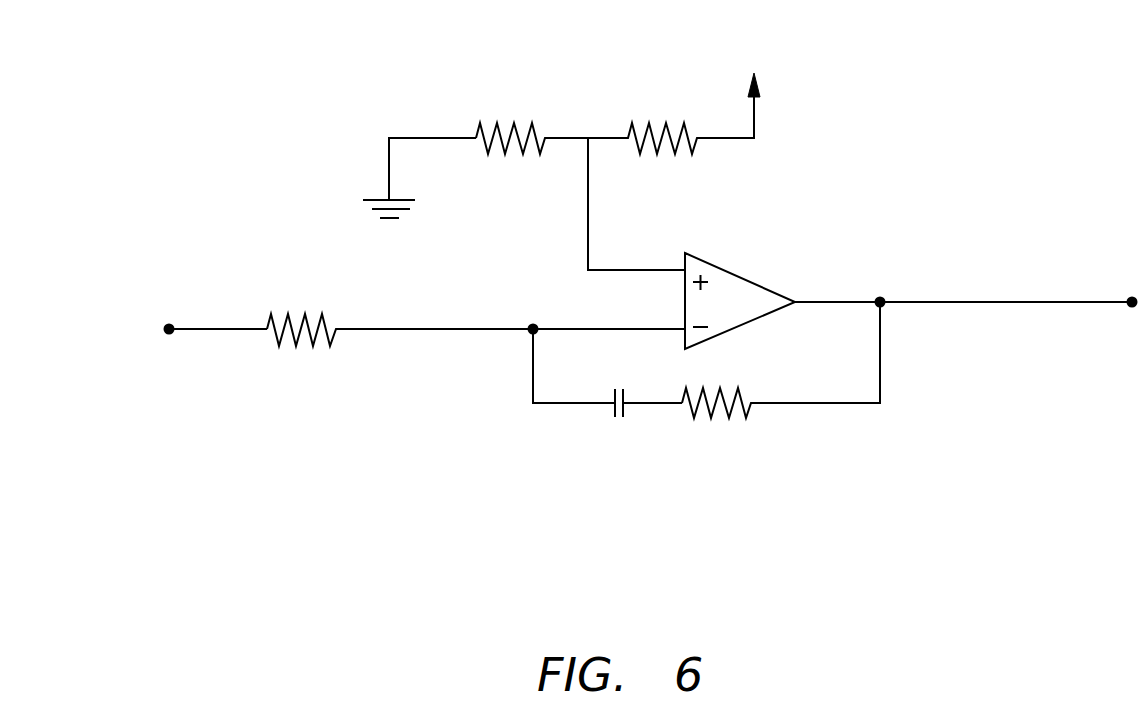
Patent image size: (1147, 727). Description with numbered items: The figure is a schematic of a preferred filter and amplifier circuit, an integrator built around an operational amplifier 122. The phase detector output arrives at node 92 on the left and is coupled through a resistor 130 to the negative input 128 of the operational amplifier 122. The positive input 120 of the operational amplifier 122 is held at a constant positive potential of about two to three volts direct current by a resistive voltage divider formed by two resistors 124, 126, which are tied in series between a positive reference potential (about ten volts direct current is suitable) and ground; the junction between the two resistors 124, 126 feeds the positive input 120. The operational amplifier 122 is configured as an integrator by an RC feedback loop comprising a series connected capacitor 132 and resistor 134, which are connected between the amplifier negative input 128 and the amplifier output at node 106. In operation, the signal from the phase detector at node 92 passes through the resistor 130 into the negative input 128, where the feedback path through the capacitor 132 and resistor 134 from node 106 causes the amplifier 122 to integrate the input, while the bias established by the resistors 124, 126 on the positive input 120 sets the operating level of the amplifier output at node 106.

The node 92 is at (228, 329).
The node 106 is at (1012, 302).
The positive input 120 is at (588, 237).
The operational amplifier 122 is at (738, 273).
The resistor 124 is at (515, 123).
The resistor 126 is at (668, 123).
The negative input 128 is at (532, 326).
The resistor 130 is at (307, 313).
The capacitor 132 is at (618, 420).
The resistor 134 is at (712, 420).